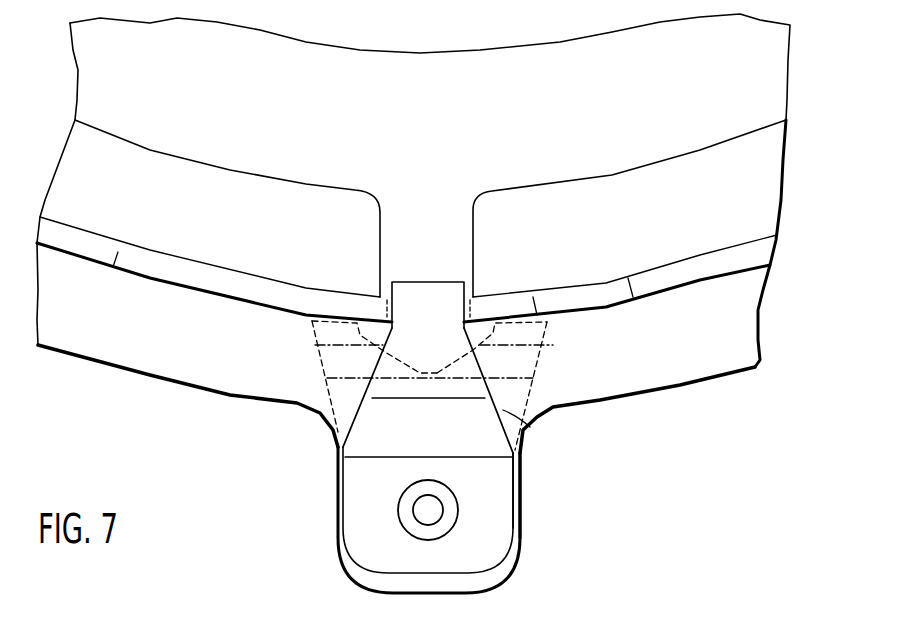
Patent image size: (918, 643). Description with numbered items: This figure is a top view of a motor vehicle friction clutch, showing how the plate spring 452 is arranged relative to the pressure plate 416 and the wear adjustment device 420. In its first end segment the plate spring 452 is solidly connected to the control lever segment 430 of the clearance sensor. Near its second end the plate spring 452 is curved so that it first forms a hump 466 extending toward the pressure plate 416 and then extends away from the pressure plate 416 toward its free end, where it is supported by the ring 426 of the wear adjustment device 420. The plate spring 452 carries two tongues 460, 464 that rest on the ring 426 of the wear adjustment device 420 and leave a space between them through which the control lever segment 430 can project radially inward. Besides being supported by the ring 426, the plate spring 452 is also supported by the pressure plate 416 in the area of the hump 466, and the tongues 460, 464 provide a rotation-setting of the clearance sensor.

The wear adjustment device 420 is at (608, 260).
The pressure plate 416 is at (707, 360).
The ring 426 is at (685, 278).
The control lever segment 430 is at (368, 437).
The plate spring 452 is at (533, 440).
The tongue 460 is at (327, 335).
The tongue 464 is at (533, 332).
The hump 466 is at (533, 367).